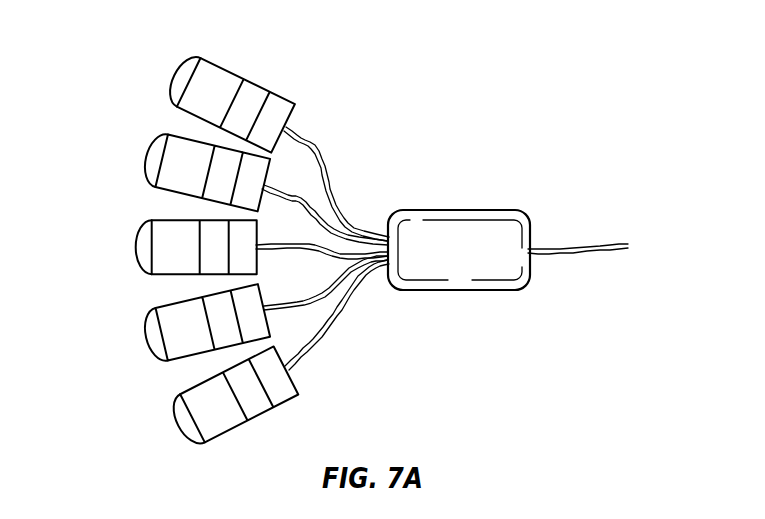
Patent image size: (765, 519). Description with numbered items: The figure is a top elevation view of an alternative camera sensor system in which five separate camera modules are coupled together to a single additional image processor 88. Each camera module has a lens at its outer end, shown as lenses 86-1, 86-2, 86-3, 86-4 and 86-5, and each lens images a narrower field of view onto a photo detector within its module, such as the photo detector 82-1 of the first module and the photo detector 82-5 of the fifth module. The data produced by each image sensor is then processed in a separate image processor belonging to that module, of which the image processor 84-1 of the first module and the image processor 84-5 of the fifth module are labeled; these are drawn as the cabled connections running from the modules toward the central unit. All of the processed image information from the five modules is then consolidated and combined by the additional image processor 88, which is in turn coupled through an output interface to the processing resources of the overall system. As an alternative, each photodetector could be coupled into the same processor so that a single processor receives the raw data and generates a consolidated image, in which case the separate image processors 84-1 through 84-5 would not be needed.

The photo detector 82-1 is at (255, 92).
The photo detector 82-5 is at (253, 407).
The image processor 84-1 is at (288, 104).
The image processor 84-5 is at (297, 390).
The lens 86-1 is at (187, 68).
The lens 86-2 is at (154, 153).
The lens 86-3 is at (140, 239).
The lens 86-4 is at (154, 343).
The lens 86-5 is at (187, 432).
The additional image processor 88 is at (462, 213).